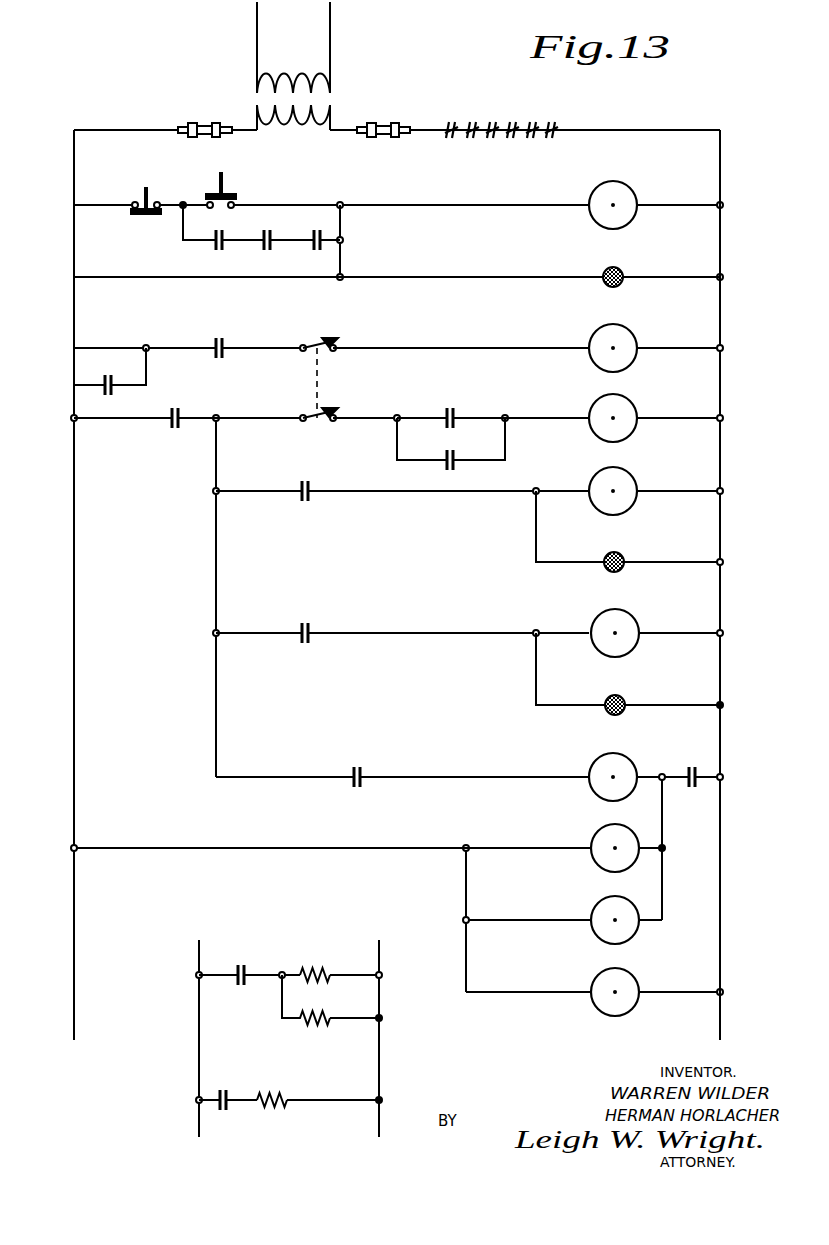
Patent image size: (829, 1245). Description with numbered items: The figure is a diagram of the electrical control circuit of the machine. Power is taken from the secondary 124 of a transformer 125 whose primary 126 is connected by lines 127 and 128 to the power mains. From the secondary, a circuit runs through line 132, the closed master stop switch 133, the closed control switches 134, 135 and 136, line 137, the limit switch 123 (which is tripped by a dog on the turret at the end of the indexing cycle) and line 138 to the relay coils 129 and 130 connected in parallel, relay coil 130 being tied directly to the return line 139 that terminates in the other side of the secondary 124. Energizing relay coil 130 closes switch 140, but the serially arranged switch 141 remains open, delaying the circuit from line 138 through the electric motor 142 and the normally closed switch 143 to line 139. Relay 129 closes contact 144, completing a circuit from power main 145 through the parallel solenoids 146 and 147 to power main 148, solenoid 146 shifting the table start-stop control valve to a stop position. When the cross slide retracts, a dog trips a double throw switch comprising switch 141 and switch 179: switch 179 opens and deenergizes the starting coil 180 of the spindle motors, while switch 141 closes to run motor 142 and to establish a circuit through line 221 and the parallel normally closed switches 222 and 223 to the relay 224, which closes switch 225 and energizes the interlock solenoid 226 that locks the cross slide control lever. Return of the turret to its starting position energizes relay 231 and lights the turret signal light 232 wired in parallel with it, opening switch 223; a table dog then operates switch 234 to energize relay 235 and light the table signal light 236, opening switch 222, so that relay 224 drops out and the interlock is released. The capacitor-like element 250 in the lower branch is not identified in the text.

The limit switch 123 is at (103, 378).
The secondary 124 is at (278, 118).
The transformer 125 is at (330, 105).
The primary 126 is at (283, 82).
The line 127 is at (330, 50).
The line 128 is at (257, 48).
The relay coil 129 is at (598, 862).
The relay coil 130 is at (632, 1008).
The line 132 is at (131, 118).
The master stop switch 133 is at (140, 196).
The control switch 134 is at (215, 253).
The control switch 135 is at (265, 252).
The control switch 136 is at (312, 252).
The line 137 is at (118, 265).
The line 138 is at (74, 692).
The return line 139 is at (720, 950).
The switch 140 is at (362, 774).
The switch 141 is at (180, 414).
The electric motor 142 is at (613, 753).
The normally closed switch 143 is at (689, 765).
The contact 144 is at (246, 963).
The power main 145 is at (199, 953).
The solenoid 146 is at (322, 965).
The solenoid 147 is at (318, 1022).
The power main 148 is at (379, 955).
The switch 179 is at (225, 345).
The starting coil 180 is at (632, 335).
The line 221 is at (362, 418).
The normally closed switch 222 is at (451, 406).
The normally closed switch 223 is at (445, 464).
The relay 224 is at (636, 408).
The switch 225 is at (228, 1092).
The solenoid 226 is at (287, 1096).
The relay 231 is at (636, 620).
The turret signal light 232 is at (622, 698).
The switch 234 is at (309, 487).
The relay 235 is at (636, 482).
The table signal light 236 is at (622, 554).
The capacitor 250 is at (309, 629).